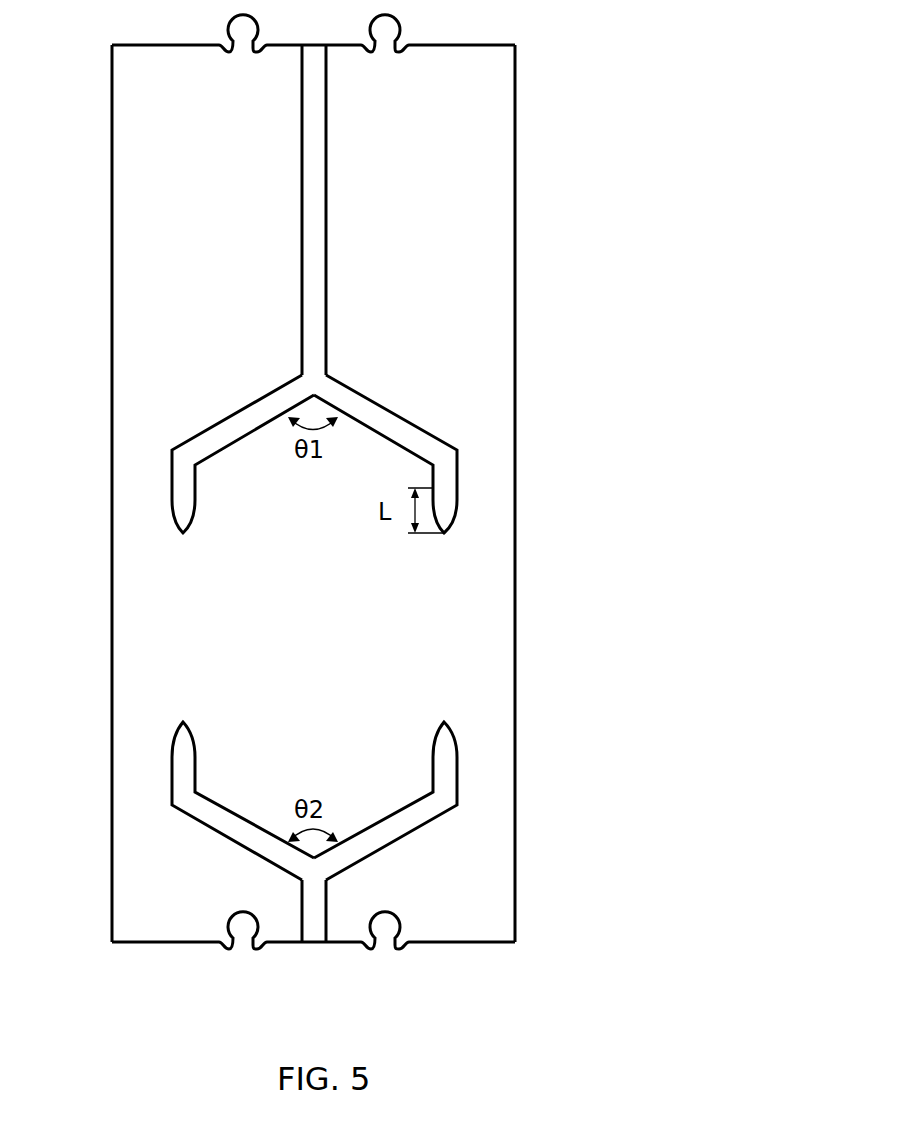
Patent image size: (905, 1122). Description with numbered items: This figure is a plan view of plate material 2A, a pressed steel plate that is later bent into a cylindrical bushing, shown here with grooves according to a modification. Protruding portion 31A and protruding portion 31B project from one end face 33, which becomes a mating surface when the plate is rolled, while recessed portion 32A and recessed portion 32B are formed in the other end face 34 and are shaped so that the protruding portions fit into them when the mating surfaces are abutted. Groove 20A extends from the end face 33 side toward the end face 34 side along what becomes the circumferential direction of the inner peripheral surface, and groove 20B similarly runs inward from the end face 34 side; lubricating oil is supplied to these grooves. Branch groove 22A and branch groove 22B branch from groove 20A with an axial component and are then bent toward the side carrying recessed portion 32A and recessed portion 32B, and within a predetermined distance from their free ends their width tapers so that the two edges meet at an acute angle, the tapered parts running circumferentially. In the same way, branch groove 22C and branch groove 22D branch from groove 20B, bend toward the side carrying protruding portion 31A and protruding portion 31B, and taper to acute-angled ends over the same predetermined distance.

The plate material 2A is at (541, 134).
The groove 20A is at (320, 240).
The groove 20B is at (312, 923).
The branch groove 22A is at (408, 430).
The branch groove 22B is at (232, 430).
The branch groove 22C is at (410, 820).
The branch groove 22D is at (215, 822).
The protruding portion 31A is at (238, 36).
The protruding portion 31B is at (378, 36).
The recessed portion 32A is at (243, 940).
The recessed portion 32B is at (385, 940).
The end face 33 is at (441, 47).
The end face 34 is at (493, 942).